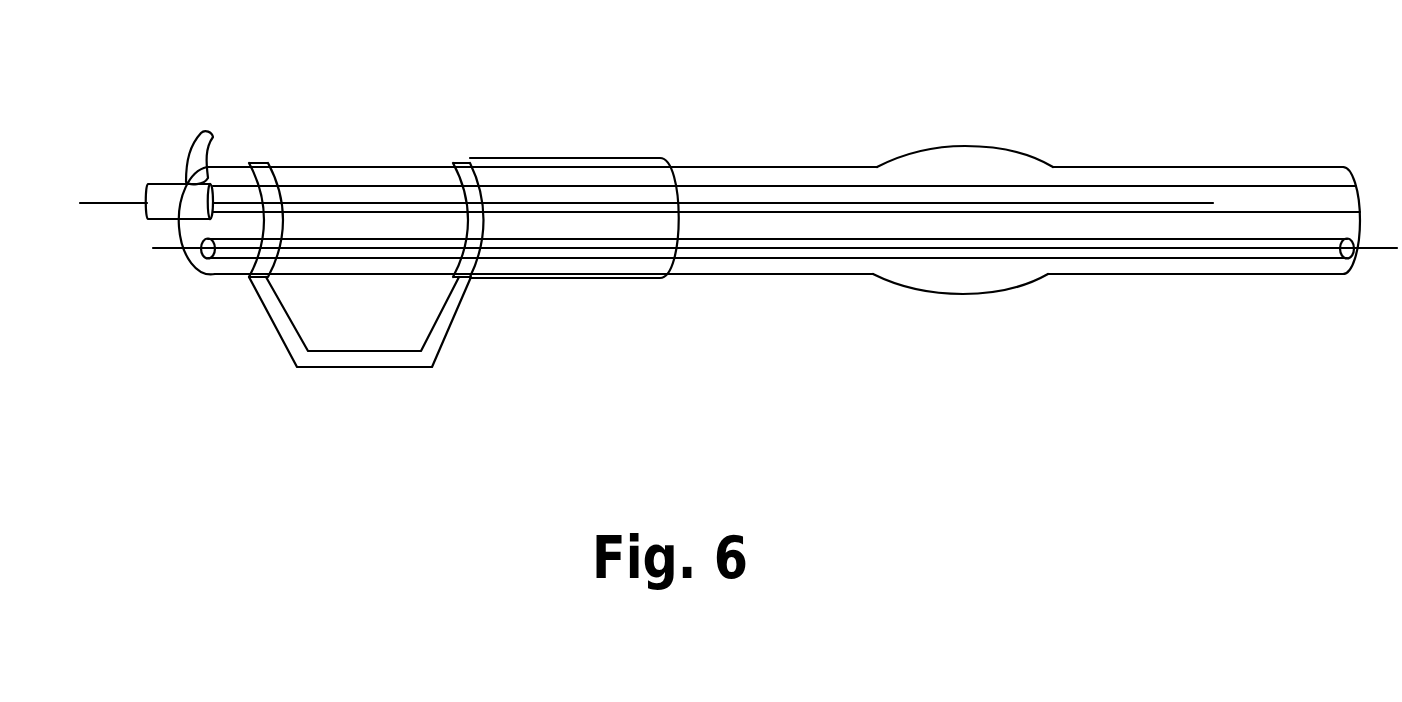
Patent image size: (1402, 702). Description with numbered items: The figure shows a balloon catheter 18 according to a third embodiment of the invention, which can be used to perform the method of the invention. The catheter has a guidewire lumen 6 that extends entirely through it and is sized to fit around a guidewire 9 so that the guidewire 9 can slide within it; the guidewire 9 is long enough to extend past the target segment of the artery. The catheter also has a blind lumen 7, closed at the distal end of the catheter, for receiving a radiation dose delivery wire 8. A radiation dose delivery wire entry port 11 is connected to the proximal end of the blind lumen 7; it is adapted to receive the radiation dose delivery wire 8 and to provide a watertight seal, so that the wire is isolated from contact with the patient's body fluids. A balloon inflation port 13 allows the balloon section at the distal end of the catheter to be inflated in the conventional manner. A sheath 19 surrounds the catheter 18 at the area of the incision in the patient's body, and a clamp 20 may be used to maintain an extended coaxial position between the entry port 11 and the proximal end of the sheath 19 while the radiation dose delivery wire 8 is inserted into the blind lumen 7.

The guidewire lumen 6 is at (750, 260).
The blind lumen 7 is at (398, 187).
The radiation dose delivery wire 8 is at (122, 202).
The guidewire 9 is at (170, 248).
The radiation dose delivery wire entry port 11 is at (167, 183).
The balloon inflation port 13 is at (207, 150).
The balloon catheter 18 is at (737, 87).
The sheath 19 is at (613, 280).
The clamp 20 is at (372, 362).